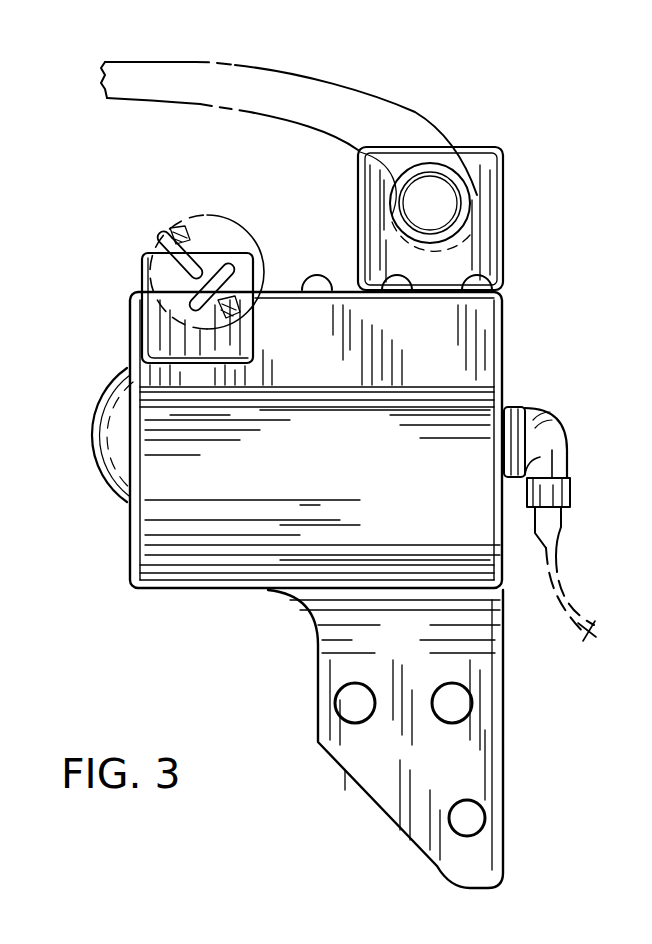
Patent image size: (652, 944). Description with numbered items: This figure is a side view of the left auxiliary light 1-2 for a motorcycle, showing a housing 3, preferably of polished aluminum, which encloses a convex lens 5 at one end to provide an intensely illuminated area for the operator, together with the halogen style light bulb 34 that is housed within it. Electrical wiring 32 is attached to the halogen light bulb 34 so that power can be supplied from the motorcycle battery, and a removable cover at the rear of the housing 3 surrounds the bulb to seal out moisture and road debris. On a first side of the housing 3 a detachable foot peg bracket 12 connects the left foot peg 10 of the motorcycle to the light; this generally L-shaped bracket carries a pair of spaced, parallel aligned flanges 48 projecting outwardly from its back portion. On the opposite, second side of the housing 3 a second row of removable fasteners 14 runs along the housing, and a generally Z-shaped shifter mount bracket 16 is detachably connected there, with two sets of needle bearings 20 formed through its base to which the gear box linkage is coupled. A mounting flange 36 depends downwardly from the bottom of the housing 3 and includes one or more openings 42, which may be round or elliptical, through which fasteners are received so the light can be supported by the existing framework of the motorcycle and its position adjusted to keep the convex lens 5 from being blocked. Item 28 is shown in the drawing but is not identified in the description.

The cable 28 is at (368, 87).
The shifter mount bracket 16 is at (507, 198).
The needle bearings 20 is at (405, 203).
The second row of removable fasteners 14 is at (392, 262).
The left auxiliary light 1-2 is at (539, 288).
The housing 3 is at (130, 560).
The foot peg bracket 12 is at (143, 278).
The left foot peg 10 is at (187, 220).
The flanges 48 is at (238, 240).
The convex lens 5 is at (92, 430).
The mounting flange 36 is at (503, 793).
The openings 42 is at (357, 703).
The halogen light bulb 34 is at (550, 432).
The electrical wiring 32 is at (541, 520).